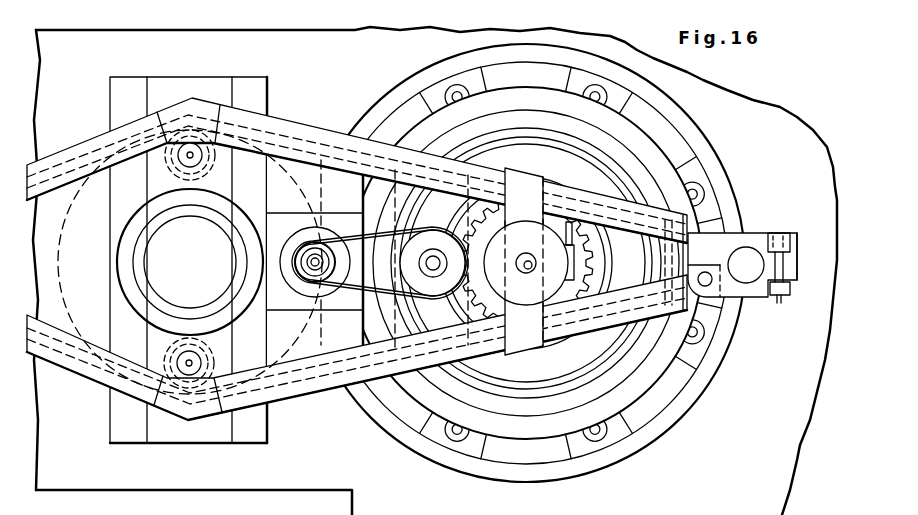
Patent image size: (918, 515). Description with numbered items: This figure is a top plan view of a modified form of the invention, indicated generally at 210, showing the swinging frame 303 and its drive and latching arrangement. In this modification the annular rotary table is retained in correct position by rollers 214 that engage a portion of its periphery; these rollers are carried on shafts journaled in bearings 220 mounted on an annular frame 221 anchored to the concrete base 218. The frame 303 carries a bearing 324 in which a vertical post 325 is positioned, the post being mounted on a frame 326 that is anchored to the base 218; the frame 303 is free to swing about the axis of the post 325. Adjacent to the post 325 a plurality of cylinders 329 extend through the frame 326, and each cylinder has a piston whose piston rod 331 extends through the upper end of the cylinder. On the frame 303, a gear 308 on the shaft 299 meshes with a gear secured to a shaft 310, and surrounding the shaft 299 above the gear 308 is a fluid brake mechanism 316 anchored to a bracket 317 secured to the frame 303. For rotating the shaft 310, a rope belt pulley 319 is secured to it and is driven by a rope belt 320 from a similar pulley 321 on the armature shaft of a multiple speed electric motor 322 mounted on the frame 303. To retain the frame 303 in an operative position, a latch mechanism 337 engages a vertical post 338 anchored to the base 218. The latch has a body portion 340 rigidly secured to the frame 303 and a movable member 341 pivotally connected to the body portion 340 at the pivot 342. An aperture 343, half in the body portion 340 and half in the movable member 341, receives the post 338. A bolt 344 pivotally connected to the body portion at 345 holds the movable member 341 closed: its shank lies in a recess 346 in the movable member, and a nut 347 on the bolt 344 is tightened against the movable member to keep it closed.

The modified form of the invention 210 is at (716, 104).
The rollers 214 is at (448, 92).
The concrete base 218 is at (248, 482).
The bearings 220 is at (624, 81).
The annular frame 221 is at (654, 117).
The shaft 299 is at (519, 258).
The frame 303 is at (73, 152).
The gear 308 is at (549, 188).
The shaft 310 is at (433, 258).
The fluid brake mechanism 316 is at (551, 238).
The bracket 317 is at (525, 182).
The rope belt pulley 319 is at (440, 288).
The rope belt 320 is at (347, 236).
The pulley 321 is at (306, 278).
The multiple speed electric motor 322 is at (294, 238).
The bearing 324 is at (126, 243).
The vertical post 325 is at (158, 233).
The frame 326 is at (127, 84).
The cylinders 329 is at (208, 168).
The piston rod 331 is at (183, 157).
The latch mechanism 337 is at (798, 233).
The vertical post 338 is at (746, 282).
The body portion 340 is at (729, 240).
The movable member 341 is at (722, 292).
The pivotal connection 342 is at (705, 276).
The aperture 343 is at (747, 247).
The bolt 344 is at (800, 316).
The pivotal connection 345 is at (770, 233).
The recess 346 is at (797, 277).
The nut 347 is at (789, 288).